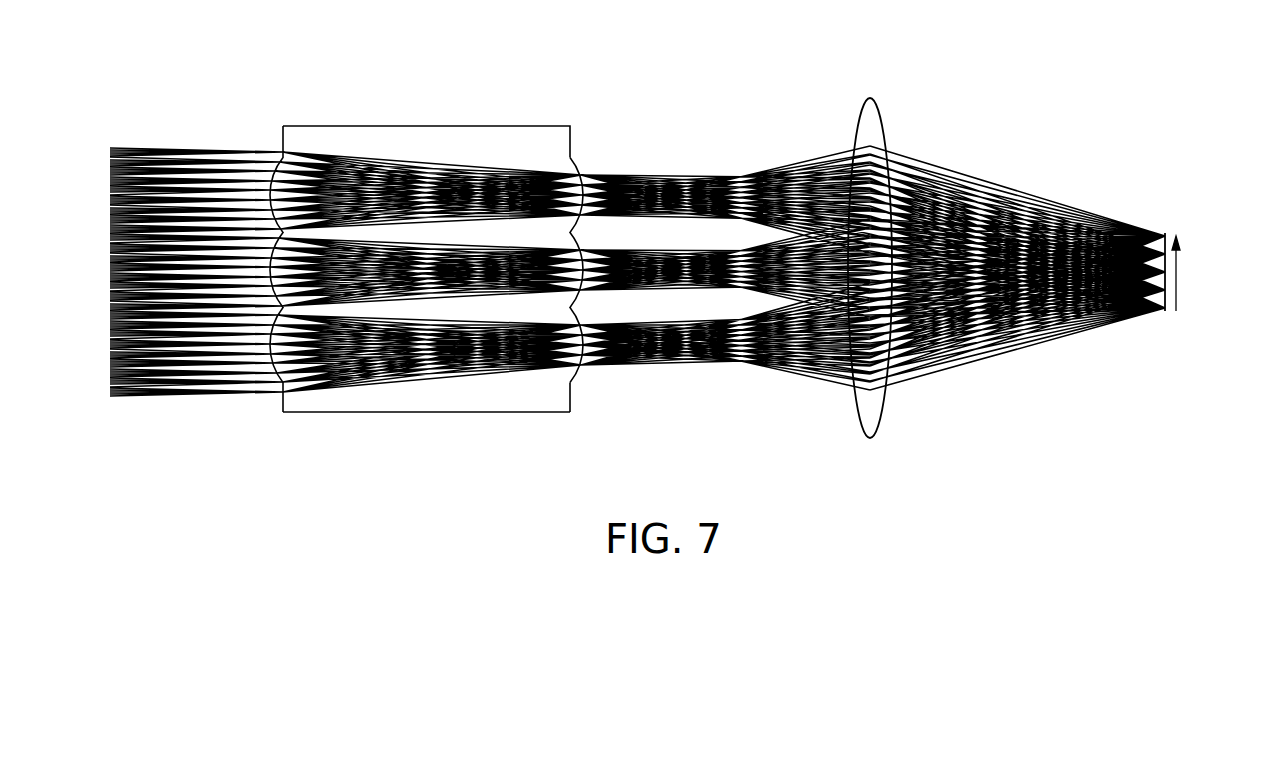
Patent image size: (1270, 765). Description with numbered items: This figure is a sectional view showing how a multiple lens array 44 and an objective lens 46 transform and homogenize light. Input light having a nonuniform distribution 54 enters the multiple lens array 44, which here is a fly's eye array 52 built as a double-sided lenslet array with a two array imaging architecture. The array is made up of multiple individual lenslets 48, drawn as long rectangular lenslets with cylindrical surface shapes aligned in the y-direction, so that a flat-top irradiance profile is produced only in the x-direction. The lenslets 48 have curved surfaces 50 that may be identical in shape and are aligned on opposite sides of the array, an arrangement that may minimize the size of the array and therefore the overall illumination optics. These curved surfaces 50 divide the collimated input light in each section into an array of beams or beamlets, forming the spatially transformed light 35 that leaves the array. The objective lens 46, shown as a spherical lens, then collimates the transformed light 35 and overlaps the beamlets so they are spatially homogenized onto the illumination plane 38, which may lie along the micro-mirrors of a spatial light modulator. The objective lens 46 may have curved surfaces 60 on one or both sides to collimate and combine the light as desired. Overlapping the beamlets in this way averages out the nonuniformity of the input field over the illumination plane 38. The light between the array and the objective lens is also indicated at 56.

The spatially transformed light 35 is at (696, 397).
The illumination plane 38 is at (1168, 236).
The multiple lens array 44 is at (454, 261).
The objective lens 46 is at (870, 268).
The lenslets 48 is at (639, 150).
The curved surfaces 50 is at (580, 158).
The fly's eye array 52 is at (470, 412).
The nonuniform distribution 54 is at (199, 131).
The light incident on condenser lens 56 is at (725, 225).
The curved surfaces 60 is at (847, 412).